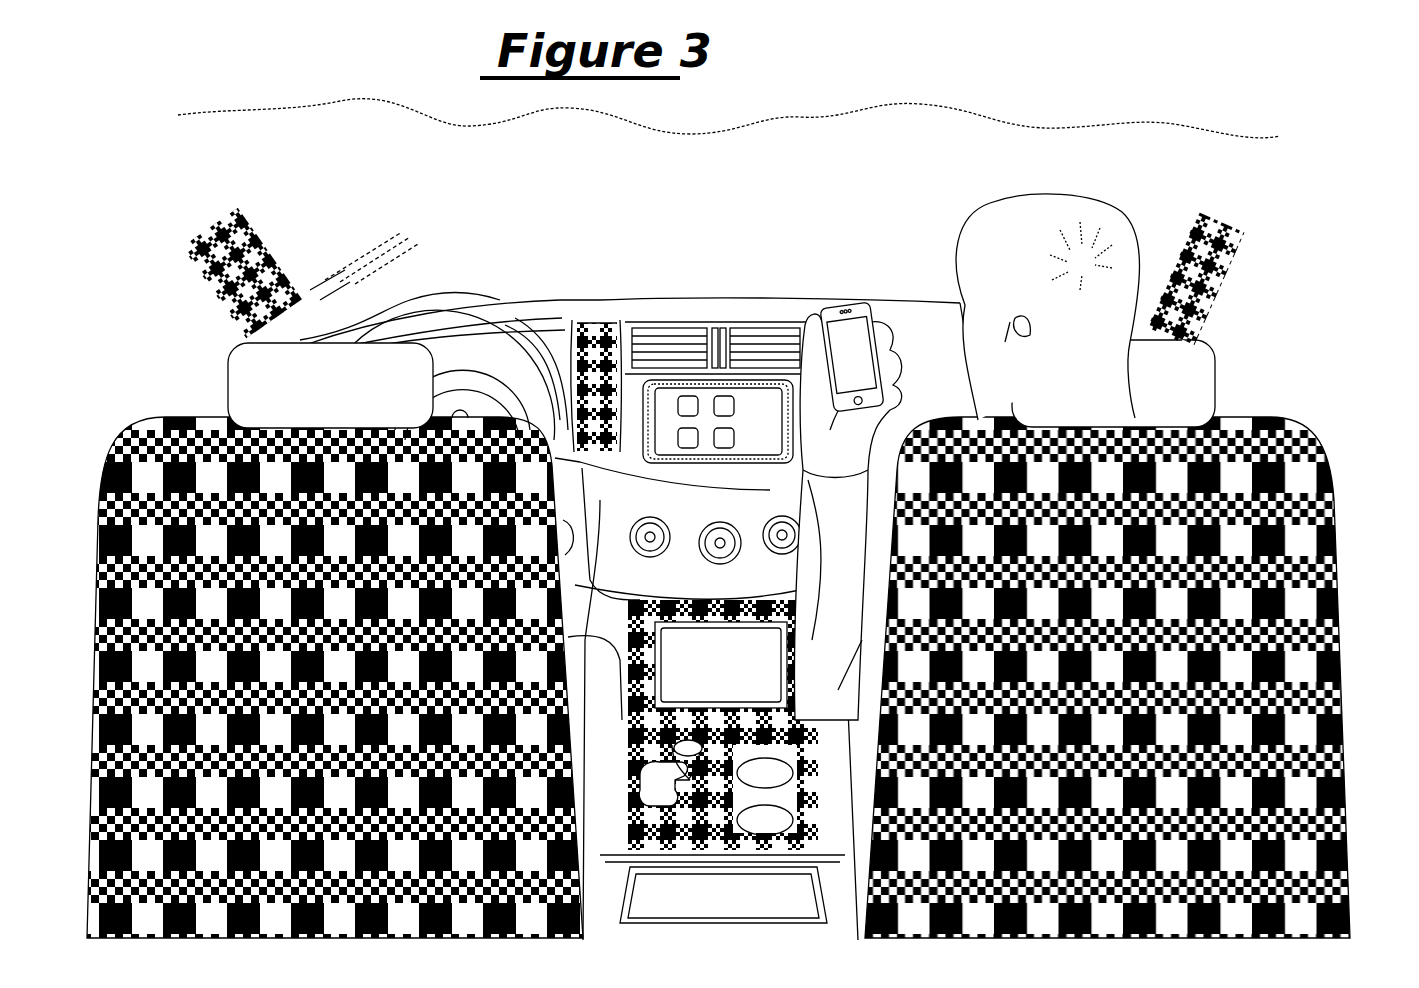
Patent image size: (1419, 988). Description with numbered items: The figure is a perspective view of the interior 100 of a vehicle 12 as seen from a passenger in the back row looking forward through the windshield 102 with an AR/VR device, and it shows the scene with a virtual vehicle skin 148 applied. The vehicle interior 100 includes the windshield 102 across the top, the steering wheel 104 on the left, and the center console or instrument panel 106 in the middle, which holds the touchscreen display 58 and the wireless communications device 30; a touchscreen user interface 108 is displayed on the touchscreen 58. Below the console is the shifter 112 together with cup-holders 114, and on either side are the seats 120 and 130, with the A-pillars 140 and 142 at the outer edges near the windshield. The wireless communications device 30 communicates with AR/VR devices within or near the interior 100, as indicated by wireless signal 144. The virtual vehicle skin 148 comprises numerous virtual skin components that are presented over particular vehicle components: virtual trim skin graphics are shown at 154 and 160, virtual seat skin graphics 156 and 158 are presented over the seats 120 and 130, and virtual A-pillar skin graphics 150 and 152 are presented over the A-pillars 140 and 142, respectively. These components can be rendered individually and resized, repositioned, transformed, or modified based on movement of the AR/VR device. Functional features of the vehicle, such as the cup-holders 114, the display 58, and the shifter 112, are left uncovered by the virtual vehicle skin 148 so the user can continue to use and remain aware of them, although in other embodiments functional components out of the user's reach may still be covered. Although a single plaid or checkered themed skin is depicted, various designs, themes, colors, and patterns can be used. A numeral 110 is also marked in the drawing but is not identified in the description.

The vehicle 12 is at (1108, 48).
The interior 100 is at (1108, 84).
The windshield 102 is at (805, 119).
The steering wheel 104 is at (470, 330).
The center console or instrument panel 106 is at (565, 340).
The touchscreen user interface 108 is at (641, 434).
The wireless communications device 30 is at (695, 464).
The touchscreen display 58 is at (750, 460).
The center stack controls 110 is at (775, 505).
The shifter 112 is at (648, 722).
The cup-holders 114 is at (790, 805).
The seat 120 is at (310, 640).
The seat 130 is at (1139, 639).
The A-pillar 140 is at (200, 250).
The A-pillar 142 is at (1194, 257).
The wireless signal 144 is at (590, 325).
The virtual vehicle skin 148 is at (177, 273).
The virtual A-pillar skin graphic 150 is at (213, 290).
The virtual A-pillar skin graphic 152 is at (1218, 310).
The virtual trim skin graphic 154 is at (597, 336).
The virtual seat skin graphic 156 is at (88, 800).
The virtual seat skin graphic 158 is at (1350, 803).
The virtual trim skin graphic 160 is at (625, 797).